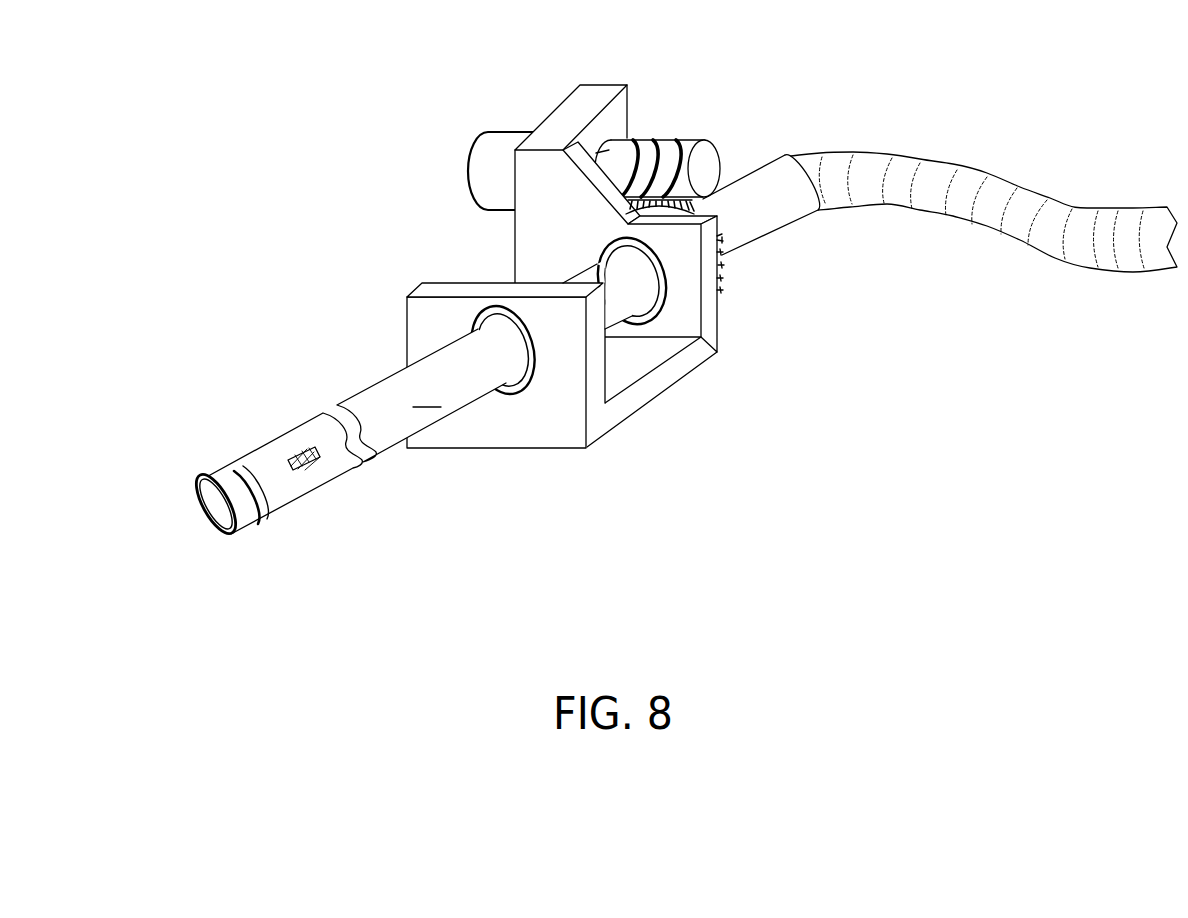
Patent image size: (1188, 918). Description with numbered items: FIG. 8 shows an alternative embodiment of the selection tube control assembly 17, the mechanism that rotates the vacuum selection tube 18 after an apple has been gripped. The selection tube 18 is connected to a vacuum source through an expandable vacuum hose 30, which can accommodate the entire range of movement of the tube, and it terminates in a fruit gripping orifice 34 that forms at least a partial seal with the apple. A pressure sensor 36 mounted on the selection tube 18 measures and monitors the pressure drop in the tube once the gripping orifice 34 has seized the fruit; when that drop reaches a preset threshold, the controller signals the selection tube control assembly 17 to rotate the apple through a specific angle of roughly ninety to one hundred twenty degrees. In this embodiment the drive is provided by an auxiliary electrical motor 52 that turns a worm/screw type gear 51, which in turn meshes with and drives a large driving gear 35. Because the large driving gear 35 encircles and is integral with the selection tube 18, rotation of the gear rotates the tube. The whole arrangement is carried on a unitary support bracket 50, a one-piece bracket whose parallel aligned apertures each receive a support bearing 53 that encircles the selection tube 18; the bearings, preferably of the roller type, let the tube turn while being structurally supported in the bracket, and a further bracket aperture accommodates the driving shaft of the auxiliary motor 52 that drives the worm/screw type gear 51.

The selection tube control assembly 17 is at (307, 138).
The selection tube 18 is at (484, 361).
The vacuum hose 30 is at (935, 158).
The fruit gripping orifice 34 is at (207, 478).
The large driving gear 35 is at (718, 218).
The pressure sensor 36 is at (300, 450).
The unitary support bracket 50 is at (655, 382).
The worm/screw type gear 51 is at (662, 138).
The auxiliary electrical motor 52 is at (508, 128).
The support bearing 53 is at (520, 380).